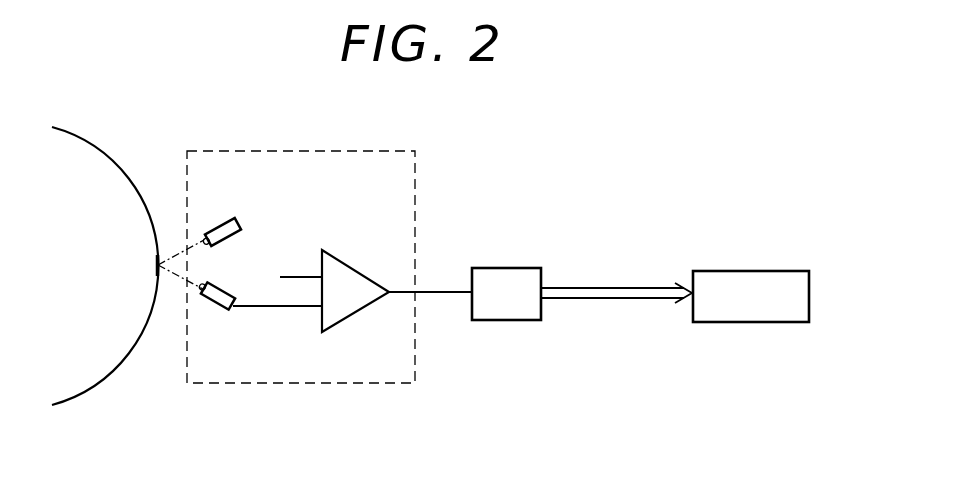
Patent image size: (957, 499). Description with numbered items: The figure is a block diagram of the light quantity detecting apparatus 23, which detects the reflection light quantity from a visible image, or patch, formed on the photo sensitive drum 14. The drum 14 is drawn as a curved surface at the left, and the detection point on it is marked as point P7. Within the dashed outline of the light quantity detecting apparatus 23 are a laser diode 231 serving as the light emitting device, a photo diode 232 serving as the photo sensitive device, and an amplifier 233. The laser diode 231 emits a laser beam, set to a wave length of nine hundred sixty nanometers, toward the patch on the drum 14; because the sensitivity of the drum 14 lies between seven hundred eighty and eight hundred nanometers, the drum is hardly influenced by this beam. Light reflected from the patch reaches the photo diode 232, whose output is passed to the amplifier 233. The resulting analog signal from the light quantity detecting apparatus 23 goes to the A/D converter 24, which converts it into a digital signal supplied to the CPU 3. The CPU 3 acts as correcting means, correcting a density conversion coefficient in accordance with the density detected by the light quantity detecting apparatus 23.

The photo sensitive drum 14 is at (105, 153).
The measuring point on surface P7 is at (165, 243).
The light quantity detecting apparatus 23 is at (388, 150).
The laser diode 231 is at (238, 222).
The photo diode 232 is at (217, 316).
The amplifier 233 is at (364, 272).
The A/D converter 24 is at (530, 268).
The CPU 3 is at (793, 272).